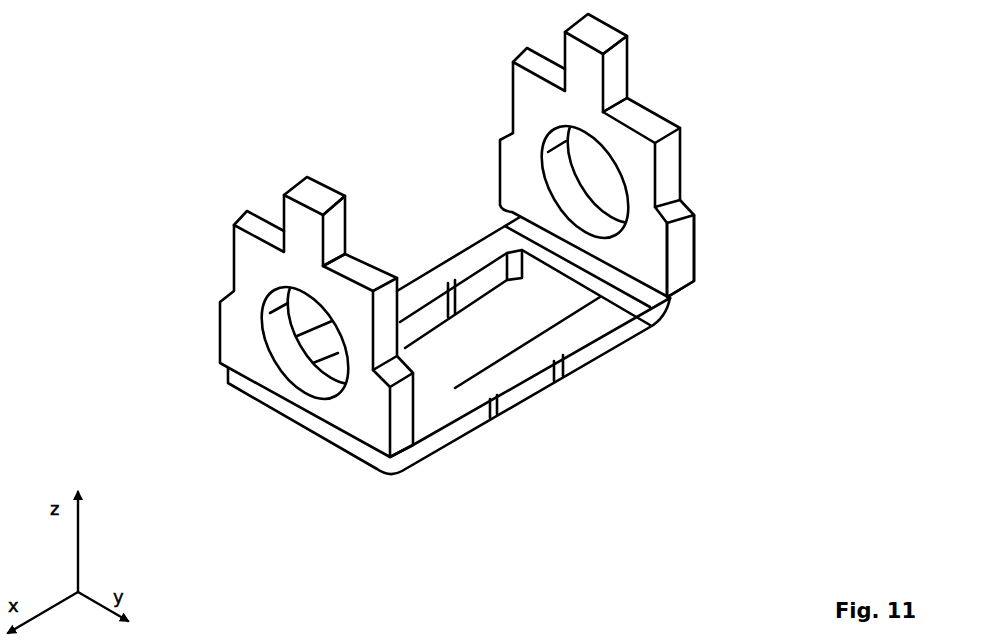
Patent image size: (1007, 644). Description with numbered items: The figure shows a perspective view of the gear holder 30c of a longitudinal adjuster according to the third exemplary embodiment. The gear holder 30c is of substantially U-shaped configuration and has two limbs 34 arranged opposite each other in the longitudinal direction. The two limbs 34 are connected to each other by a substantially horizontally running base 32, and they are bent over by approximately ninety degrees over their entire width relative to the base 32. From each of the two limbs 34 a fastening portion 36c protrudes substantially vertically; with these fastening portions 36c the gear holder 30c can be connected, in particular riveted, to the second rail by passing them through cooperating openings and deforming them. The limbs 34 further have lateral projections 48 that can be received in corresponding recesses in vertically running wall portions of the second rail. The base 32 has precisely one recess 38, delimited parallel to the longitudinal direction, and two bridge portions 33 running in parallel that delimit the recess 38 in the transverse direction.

The gear holder 30c is at (162, 112).
The base 32 is at (515, 392).
The bridge portions 33 is at (450, 288).
The limbs 34 is at (363, 425).
The fastening portion 36c is at (275, 207).
The recess 38 is at (485, 313).
The lateral projections 48 is at (683, 257).